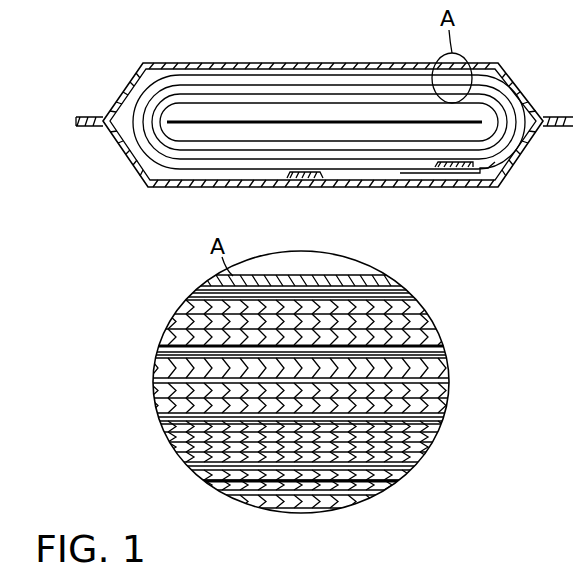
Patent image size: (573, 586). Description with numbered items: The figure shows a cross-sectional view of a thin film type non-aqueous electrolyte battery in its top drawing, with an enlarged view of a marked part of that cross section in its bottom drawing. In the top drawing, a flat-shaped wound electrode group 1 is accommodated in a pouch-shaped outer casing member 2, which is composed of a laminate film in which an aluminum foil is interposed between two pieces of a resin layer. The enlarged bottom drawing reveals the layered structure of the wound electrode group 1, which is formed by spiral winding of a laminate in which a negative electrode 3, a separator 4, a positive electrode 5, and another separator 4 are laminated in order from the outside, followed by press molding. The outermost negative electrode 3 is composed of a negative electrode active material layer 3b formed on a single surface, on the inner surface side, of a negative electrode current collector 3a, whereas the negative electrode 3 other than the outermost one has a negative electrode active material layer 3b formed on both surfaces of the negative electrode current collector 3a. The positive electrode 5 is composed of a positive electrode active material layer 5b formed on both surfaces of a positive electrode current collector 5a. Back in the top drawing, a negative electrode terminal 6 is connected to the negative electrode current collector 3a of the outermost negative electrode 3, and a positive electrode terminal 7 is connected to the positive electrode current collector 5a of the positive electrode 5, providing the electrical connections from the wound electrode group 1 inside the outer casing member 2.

The flat-shaped wound electrode group 1 is at (212, 82).
The outer casing member 2 is at (345, 63).
The negative electrode 3 is at (488, 258).
The negative electrode current collector 3a is at (425, 290).
The negative electrode active material layer 3b is at (412, 300).
The separator 4 is at (173, 325).
The positive electrode 5 is at (506, 312).
The positive electrode current collector 5a is at (437, 347).
The positive electrode active material layer 5b is at (432, 317).
The negative electrode terminal 6 is at (309, 178).
The positive electrode terminal 7 is at (455, 168).